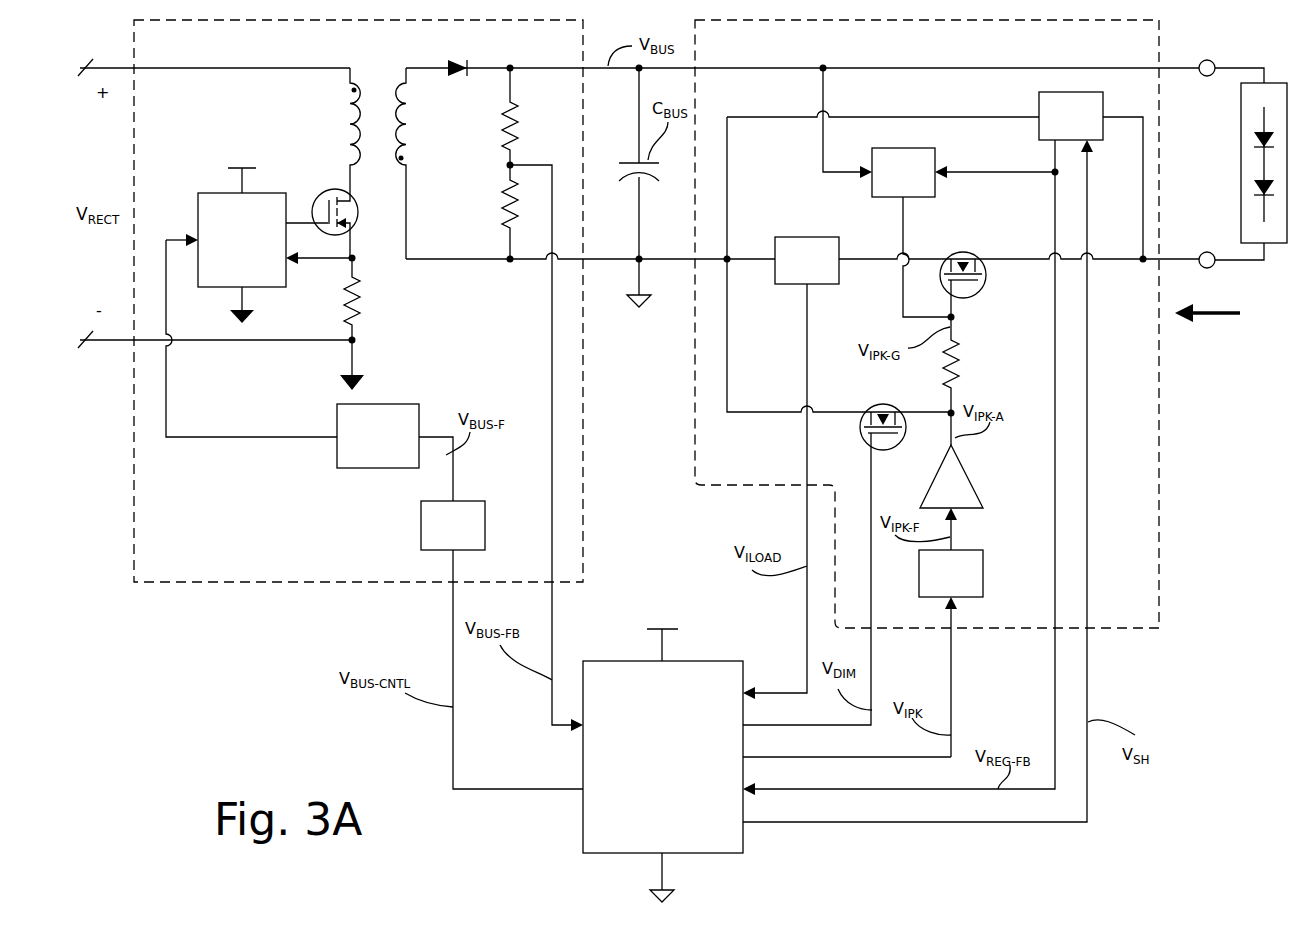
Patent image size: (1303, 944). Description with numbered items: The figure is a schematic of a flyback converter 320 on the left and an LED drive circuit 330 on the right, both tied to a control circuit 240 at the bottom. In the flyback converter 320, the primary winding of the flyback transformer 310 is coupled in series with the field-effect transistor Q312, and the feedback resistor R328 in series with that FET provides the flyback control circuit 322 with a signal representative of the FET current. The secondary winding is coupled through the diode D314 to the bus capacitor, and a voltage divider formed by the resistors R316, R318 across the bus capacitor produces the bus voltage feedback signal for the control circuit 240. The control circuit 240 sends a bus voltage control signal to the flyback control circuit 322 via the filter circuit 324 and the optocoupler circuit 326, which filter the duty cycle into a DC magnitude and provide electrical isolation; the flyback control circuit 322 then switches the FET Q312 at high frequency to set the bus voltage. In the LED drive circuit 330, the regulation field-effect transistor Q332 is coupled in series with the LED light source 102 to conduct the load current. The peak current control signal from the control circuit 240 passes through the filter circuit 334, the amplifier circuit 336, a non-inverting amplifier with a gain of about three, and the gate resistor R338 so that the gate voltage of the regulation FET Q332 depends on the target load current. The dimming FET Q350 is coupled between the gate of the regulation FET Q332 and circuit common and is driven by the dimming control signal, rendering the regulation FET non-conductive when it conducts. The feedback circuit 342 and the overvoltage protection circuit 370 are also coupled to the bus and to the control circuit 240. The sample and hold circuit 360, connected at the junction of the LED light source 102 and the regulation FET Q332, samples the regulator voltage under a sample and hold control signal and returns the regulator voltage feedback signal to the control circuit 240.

The LED light source 102 is at (1277, 228).
The control circuit 240 is at (592, 823).
The flyback transformer 310 is at (334, 123).
The field-effect transistor Q312 is at (330, 190).
The diode D314 is at (465, 80).
The resistor R316 is at (518, 129).
The resistor R318 is at (505, 184).
The flyback converter 320 is at (281, 583).
The flyback control circuit 322 is at (207, 193).
The filter circuit 324 is at (485, 527).
The optocoupler circuit 326 is at (408, 403).
The feedback resistor R328 is at (345, 310).
The LED drive circuit 330 is at (693, 399).
The regulation field-effect transistor Q332 is at (977, 289).
The filter circuit 334 is at (972, 557).
The amplifier circuit 336 is at (955, 466).
The gate resistor R338 is at (958, 362).
The feedback circuit 342 is at (835, 273).
The dimming FET Q350 is at (897, 405).
The sample and hold circuit 360 is at (1040, 100).
The overvoltage protection circuit 370 is at (876, 186).